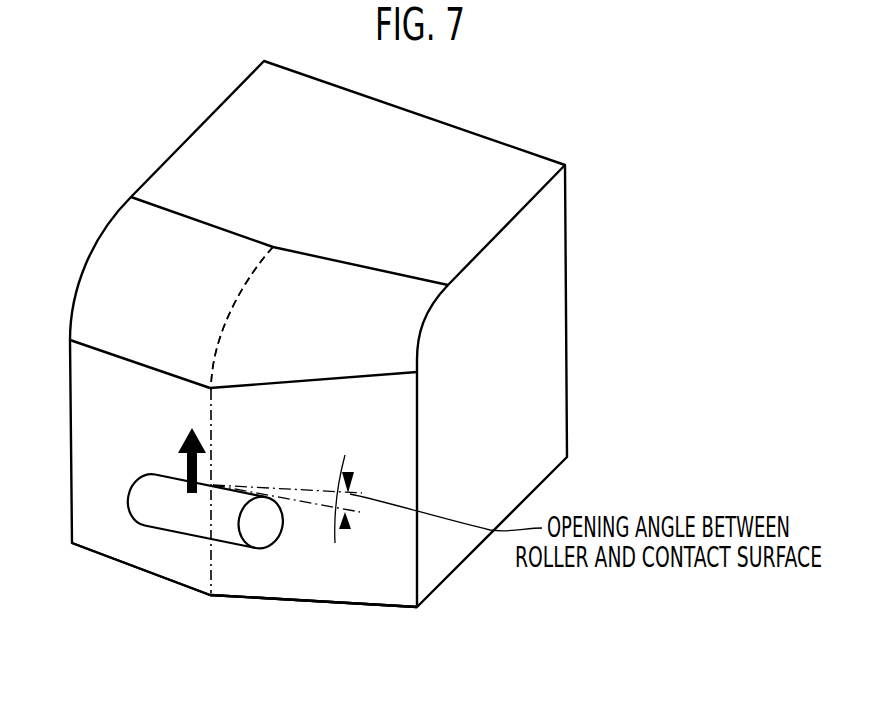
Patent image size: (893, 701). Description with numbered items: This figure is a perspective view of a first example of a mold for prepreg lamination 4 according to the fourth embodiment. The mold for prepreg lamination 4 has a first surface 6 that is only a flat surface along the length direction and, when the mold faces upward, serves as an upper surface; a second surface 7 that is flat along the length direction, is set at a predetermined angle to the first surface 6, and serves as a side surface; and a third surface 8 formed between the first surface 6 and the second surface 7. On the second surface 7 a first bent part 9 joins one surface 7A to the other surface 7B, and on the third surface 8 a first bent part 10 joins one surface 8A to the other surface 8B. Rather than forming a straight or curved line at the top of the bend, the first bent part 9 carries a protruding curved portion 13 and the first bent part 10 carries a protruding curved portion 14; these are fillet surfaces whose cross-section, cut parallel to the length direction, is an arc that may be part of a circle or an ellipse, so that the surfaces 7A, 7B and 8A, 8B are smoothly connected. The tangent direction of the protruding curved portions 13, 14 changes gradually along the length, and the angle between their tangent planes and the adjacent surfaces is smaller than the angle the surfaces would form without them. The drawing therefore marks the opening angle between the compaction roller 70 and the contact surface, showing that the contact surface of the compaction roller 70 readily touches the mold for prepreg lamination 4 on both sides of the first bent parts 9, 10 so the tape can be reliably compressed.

The mold for prepreg lamination 4 is at (548, 291).
The first surface 6 is at (401, 128).
The second surface 7 is at (243, 608).
The one surface 7A is at (98, 540).
The other surface 7B is at (363, 582).
The third surface 8 is at (243, 393).
The one surface 8A is at (128, 340).
The other surface 8B is at (308, 352).
The first bent part 9 is at (195, 581).
The first bent part 10 is at (212, 314).
The protruding curved portion 13 is at (232, 577).
The protruding curved portion 14 is at (252, 290).
The compaction roller 70 is at (167, 503).